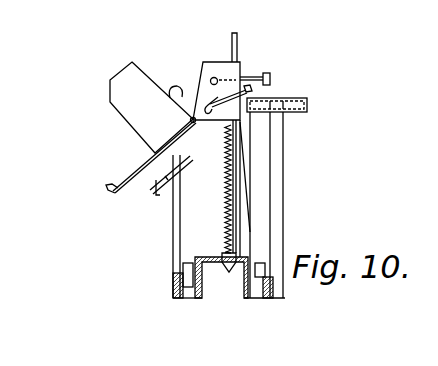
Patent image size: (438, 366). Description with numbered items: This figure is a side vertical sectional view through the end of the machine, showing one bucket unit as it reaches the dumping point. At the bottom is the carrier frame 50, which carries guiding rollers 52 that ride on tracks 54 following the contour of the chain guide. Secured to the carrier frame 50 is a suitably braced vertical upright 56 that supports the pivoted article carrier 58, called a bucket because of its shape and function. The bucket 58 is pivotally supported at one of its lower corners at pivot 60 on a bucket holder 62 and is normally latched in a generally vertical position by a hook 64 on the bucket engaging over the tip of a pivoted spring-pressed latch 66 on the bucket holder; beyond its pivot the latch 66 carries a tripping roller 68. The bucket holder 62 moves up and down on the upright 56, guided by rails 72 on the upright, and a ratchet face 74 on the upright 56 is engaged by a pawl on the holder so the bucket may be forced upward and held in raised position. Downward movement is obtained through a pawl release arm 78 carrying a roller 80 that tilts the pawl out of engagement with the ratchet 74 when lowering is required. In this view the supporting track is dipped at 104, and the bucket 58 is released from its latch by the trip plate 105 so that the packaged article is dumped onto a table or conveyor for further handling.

The carrier frame 50 is at (205, 256).
The guiding rollers 52 is at (189, 268).
The tracks 54 is at (274, 282).
The vertical upright 56 is at (245, 172).
The article carrier 58 is at (112, 93).
The bucket pivot 60 is at (204, 136).
The bucket holder 62 is at (218, 61).
The hook 64 is at (171, 86).
The latch 66 is at (217, 95).
The tripping roller 68 is at (262, 97).
The rails 72 is at (241, 220).
The ratchet face 74 is at (226, 158).
The pawl release arm 78 is at (242, 81).
The roller 80 is at (270, 73).
The dipped track section 104 is at (156, 190).
The trip plate 105 is at (314, 193).